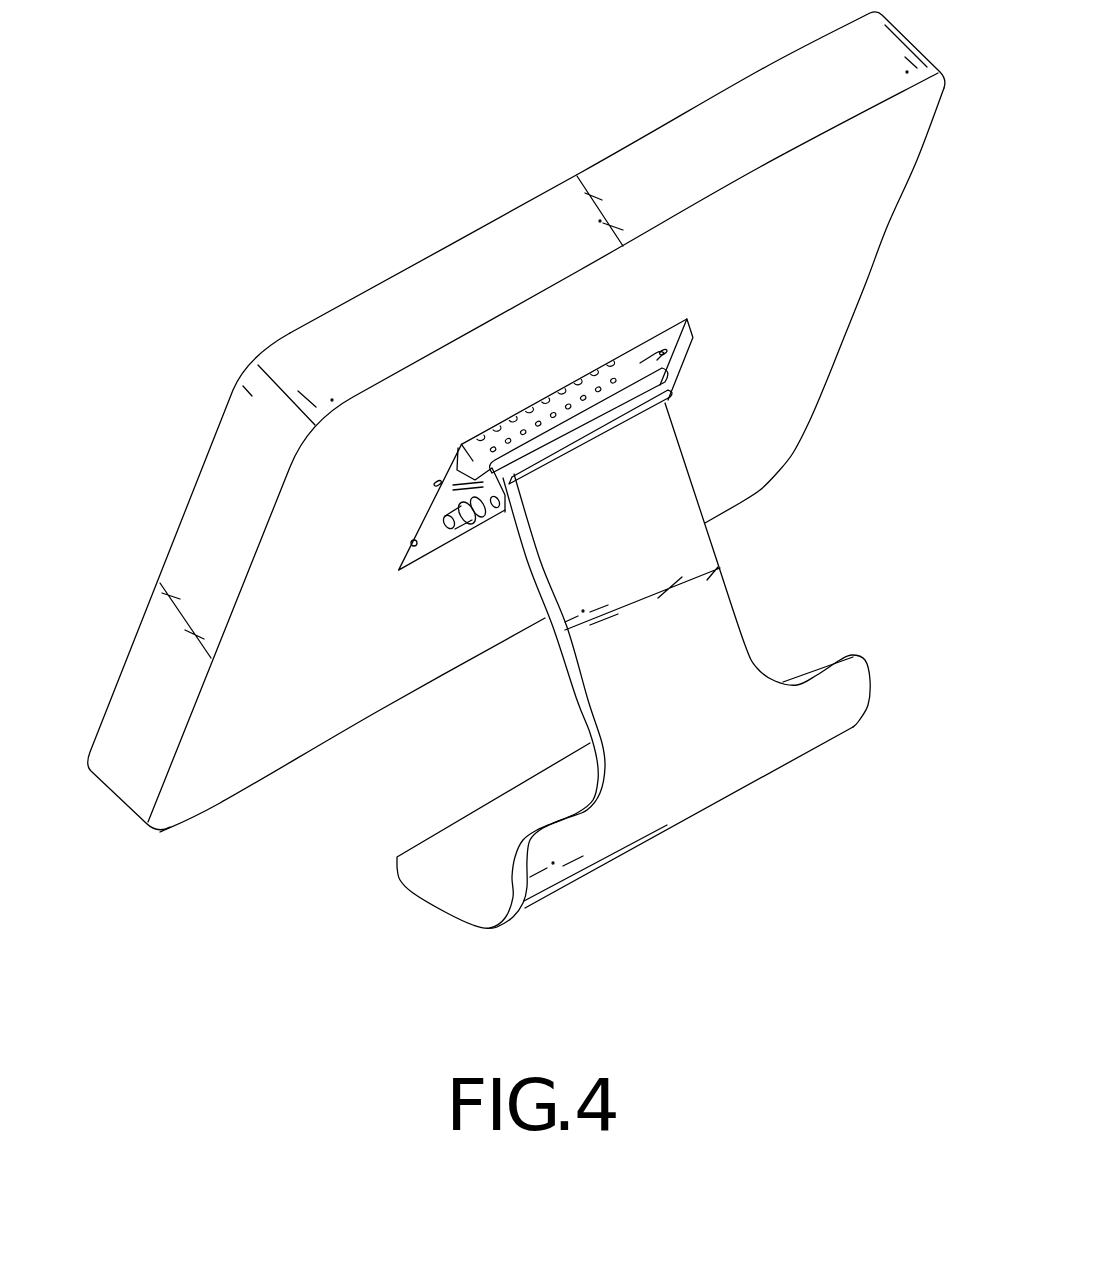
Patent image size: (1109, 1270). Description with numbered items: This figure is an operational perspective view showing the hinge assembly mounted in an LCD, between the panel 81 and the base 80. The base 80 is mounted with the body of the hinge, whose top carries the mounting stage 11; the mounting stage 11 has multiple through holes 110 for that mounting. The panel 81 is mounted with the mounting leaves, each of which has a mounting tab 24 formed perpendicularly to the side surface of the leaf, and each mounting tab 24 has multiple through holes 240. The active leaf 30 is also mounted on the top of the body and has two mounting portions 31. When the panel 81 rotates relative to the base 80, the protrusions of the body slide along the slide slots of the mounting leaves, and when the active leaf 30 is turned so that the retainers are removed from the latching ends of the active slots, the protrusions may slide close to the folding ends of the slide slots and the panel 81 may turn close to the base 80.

The mounting stage 11 is at (603, 378).
The through holes 110 is at (553, 415).
The active leaf 30 is at (590, 417).
The mounting portions 31 is at (455, 495).
The mounting tab 24 is at (425, 520).
The through holes 240 is at (418, 543).
The base 80 is at (732, 645).
The panel 81 is at (805, 367).